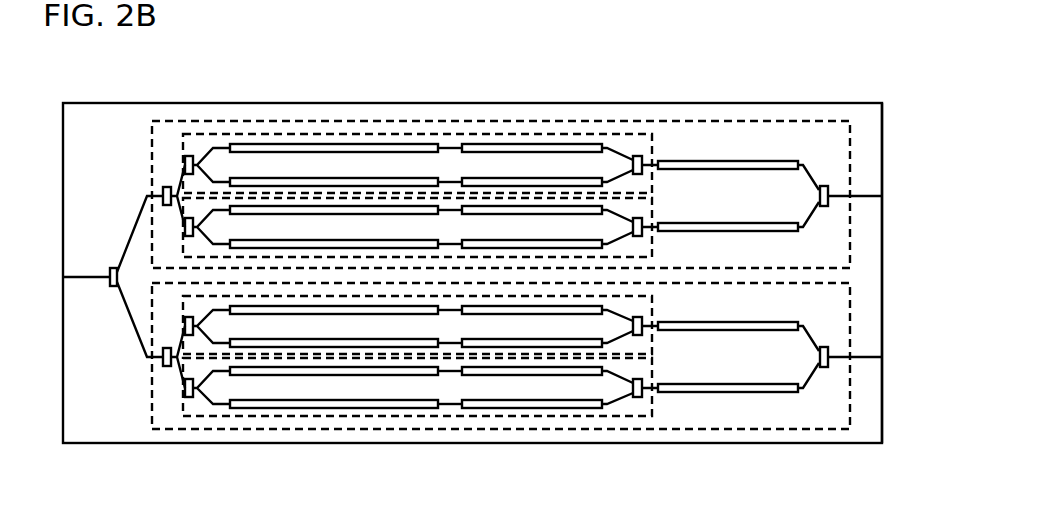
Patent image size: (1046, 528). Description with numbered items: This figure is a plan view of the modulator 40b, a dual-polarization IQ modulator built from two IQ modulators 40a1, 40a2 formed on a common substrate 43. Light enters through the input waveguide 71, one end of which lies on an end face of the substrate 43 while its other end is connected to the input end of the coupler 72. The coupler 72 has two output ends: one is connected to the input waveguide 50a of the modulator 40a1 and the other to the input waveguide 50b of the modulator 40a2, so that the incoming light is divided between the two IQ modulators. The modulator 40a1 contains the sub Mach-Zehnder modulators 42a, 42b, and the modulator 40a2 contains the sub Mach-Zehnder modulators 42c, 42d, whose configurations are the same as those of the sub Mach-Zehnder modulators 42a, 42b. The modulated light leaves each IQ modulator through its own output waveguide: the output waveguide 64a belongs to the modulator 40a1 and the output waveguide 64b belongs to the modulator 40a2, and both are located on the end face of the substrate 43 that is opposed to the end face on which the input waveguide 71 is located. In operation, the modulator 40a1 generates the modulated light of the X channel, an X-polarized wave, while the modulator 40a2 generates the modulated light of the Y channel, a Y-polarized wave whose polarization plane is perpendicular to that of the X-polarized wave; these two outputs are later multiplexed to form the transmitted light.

The modulator 40b is at (960, 92).
The modulator 40a1 is at (481, 161).
The modulator 40a2 is at (514, 390).
The sub Mach-Zehnder modulator 42a is at (642, 132).
The sub Mach-Zehnder modulator 42b is at (652, 210).
The sub Mach-Zehnder modulator 42c is at (638, 413).
The sub Mach-Zehnder modulator 42d is at (652, 338).
The substrate 43 is at (878, 410).
The input waveguide 50a is at (148, 197).
The input waveguide 50b is at (146, 357).
The output waveguide 64a is at (865, 195).
The output waveguide 64b is at (872, 360).
The input waveguide 71 is at (92, 276).
The coupler 72 is at (107, 288).